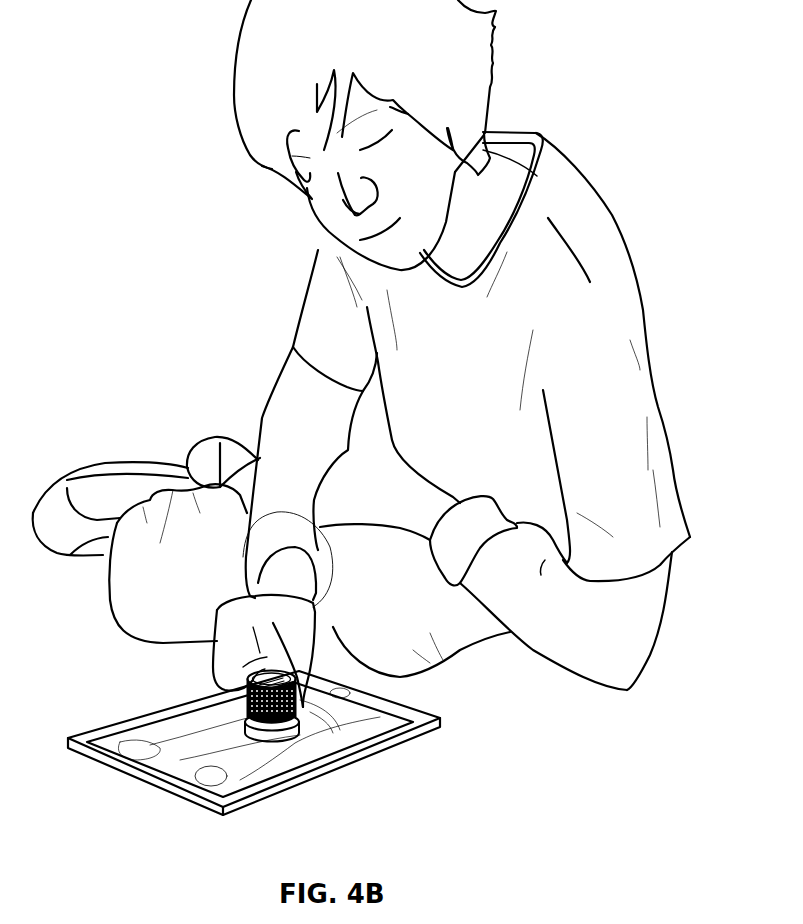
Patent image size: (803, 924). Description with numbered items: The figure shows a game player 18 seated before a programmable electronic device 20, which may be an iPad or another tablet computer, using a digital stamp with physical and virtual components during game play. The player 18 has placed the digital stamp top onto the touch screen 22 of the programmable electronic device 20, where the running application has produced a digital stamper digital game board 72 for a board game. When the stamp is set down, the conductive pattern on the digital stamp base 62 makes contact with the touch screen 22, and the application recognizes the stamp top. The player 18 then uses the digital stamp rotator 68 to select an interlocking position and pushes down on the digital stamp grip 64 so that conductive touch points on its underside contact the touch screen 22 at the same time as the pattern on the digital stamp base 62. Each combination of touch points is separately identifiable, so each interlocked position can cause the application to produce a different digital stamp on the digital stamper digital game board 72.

The game player 18 is at (657, 407).
The programmable electronic device 20 is at (432, 728).
The touch screen 22 is at (323, 749).
The digital stamp base 62 is at (247, 732).
The digital stamp grip 64 is at (250, 687).
The digital stamp rotator 68 is at (248, 697).
The digital stamper digital game board 72 is at (230, 787).